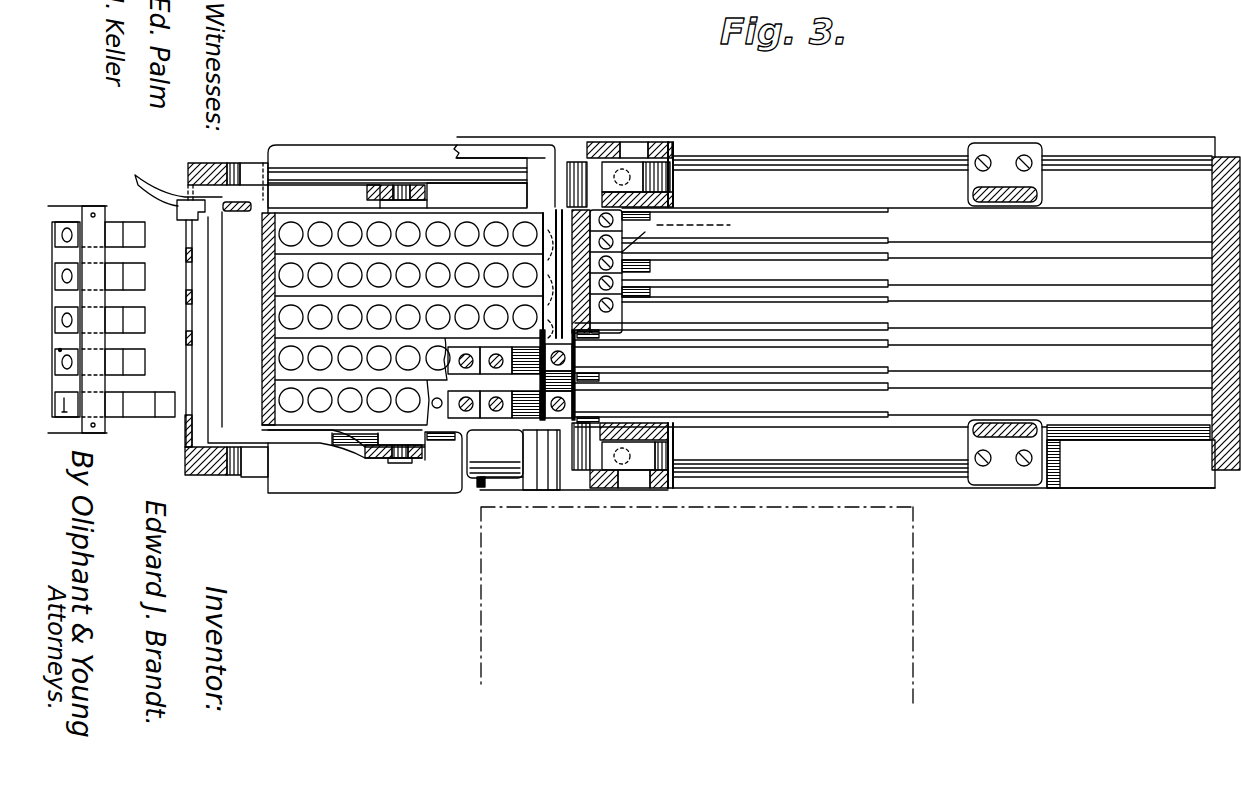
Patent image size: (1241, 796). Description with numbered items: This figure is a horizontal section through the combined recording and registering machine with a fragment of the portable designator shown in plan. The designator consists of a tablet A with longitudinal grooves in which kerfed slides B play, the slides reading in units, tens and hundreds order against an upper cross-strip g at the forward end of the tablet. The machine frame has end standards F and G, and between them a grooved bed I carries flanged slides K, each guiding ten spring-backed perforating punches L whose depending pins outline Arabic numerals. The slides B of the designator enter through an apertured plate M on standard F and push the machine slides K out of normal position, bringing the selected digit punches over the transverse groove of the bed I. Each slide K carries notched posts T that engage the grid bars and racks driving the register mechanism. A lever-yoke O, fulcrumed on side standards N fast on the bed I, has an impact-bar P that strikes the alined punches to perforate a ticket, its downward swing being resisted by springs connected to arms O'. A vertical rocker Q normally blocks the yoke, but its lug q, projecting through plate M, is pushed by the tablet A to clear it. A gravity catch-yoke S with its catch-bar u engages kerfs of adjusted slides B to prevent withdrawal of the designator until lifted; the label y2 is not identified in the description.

The tablet A is at (74, 194).
The upper cross-strip g is at (96, 212).
The slides B is at (145, 238).
The catch-bar u is at (212, 273).
The posts T is at (260, 283).
The lug q is at (176, 211).
The plate M is at (180, 172).
The end standard F is at (212, 165).
The vertical rocker Q is at (240, 202).
The gravity catch-yoke S is at (312, 182).
The flanged slides K is at (330, 268).
The perforating punches L is at (408, 283).
The impact-bar P is at (545, 213).
The lever-yoke O is at (506, 159).
The arms O' is at (620, 322).
The side standards N is at (675, 198).
The bed I is at (1125, 148).
The end standard G is at (1212, 313).
The spring y2 is at (676, 234).